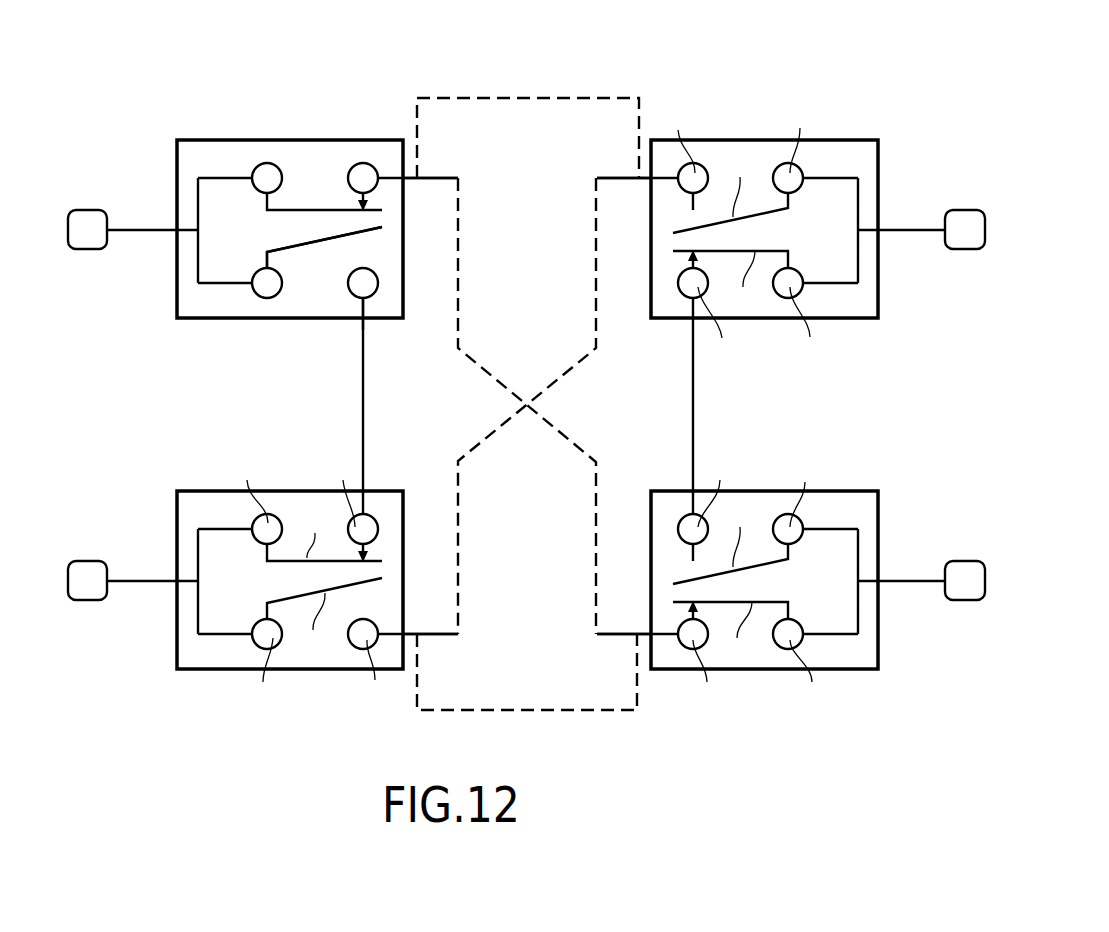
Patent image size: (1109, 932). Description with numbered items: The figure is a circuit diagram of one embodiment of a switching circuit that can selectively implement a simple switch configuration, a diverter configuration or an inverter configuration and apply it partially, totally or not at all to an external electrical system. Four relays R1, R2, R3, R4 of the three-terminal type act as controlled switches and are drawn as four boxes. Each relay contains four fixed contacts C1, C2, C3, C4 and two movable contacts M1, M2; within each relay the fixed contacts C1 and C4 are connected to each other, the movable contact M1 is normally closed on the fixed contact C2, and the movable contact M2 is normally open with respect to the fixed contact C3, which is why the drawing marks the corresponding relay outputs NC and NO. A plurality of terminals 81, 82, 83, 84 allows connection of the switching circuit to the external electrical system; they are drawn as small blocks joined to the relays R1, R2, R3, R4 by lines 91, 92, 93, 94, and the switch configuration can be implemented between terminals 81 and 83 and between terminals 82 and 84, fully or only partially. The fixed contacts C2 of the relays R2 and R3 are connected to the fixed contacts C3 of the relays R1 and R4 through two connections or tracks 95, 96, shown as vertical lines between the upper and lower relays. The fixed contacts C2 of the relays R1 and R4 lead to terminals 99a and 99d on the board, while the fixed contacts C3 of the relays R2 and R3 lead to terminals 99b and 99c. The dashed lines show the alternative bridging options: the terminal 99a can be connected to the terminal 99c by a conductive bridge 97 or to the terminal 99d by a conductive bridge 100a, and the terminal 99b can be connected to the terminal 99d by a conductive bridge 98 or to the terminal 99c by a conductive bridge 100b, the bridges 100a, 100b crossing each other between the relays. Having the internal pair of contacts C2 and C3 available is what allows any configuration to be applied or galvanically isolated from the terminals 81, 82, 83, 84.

The relay R1 is at (313, 209).
The relay R2 is at (202, 673).
The relay R3 is at (853, 140).
The relay R4 is at (857, 670).
The fixed contact C1 is at (270, 173).
The fixed contact C2 is at (362, 173).
The fixed contact C3 is at (358, 288).
The fixed contact C4 is at (268, 288).
The movable contact M1 is at (307, 208).
The movable contact M2 is at (323, 240).
The normally closed terminal NC is at (419, 163).
The normally open terminal NO is at (386, 327).
The terminal 81 is at (95, 250).
The terminal 82 is at (90, 560).
The terminal 83 is at (968, 250).
The terminal 84 is at (960, 560).
The first line 91 is at (143, 225).
The second line 92 is at (133, 587).
The third line 93 is at (915, 227).
The fourth line 94 is at (917, 582).
The connection or track 95 is at (362, 390).
The connection or track 96 is at (694, 400).
The conductive bridge 97 is at (528, 97).
The conductive bridge 98 is at (565, 712).
The terminal 99a is at (440, 178).
The terminal 99b is at (435, 634).
The terminal 99c is at (620, 178).
The terminal 99d is at (613, 634).
The conductive bridge 100a is at (496, 376).
The conductive bridge 100b is at (477, 445).